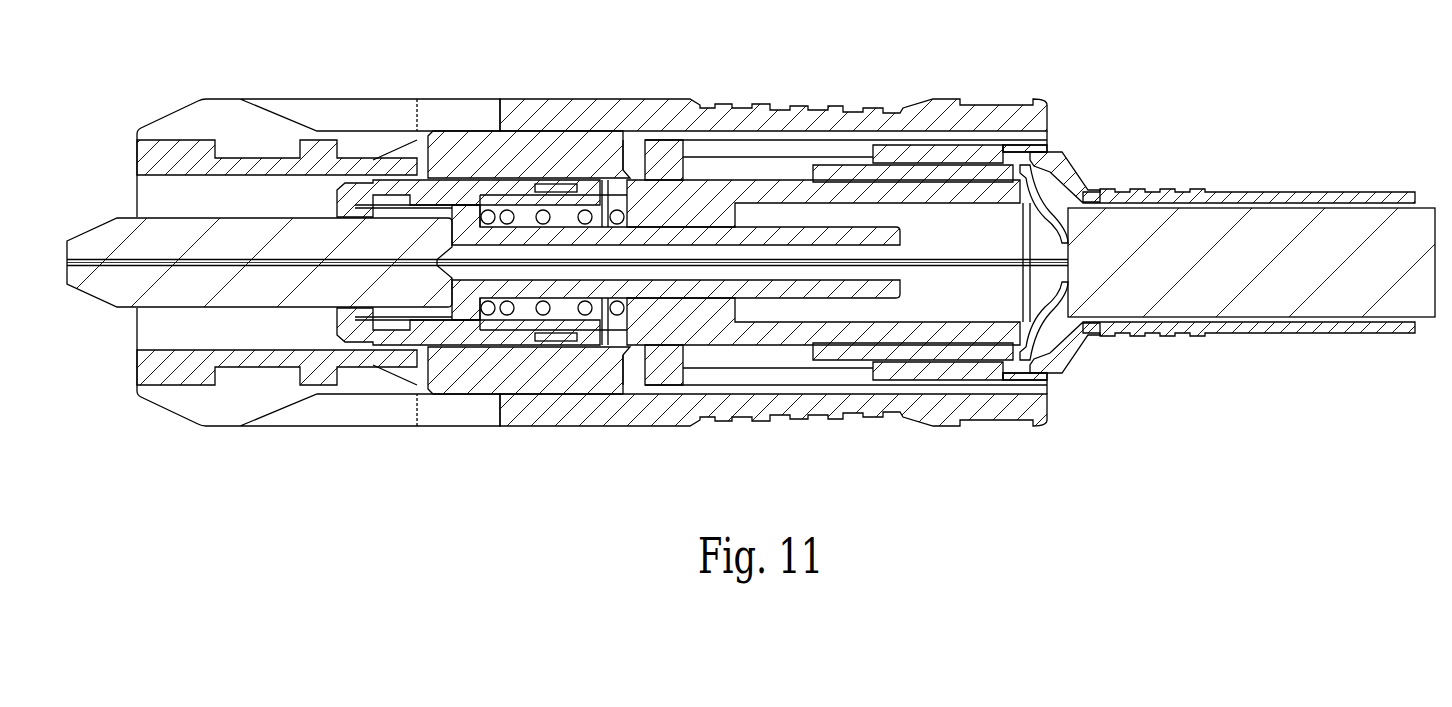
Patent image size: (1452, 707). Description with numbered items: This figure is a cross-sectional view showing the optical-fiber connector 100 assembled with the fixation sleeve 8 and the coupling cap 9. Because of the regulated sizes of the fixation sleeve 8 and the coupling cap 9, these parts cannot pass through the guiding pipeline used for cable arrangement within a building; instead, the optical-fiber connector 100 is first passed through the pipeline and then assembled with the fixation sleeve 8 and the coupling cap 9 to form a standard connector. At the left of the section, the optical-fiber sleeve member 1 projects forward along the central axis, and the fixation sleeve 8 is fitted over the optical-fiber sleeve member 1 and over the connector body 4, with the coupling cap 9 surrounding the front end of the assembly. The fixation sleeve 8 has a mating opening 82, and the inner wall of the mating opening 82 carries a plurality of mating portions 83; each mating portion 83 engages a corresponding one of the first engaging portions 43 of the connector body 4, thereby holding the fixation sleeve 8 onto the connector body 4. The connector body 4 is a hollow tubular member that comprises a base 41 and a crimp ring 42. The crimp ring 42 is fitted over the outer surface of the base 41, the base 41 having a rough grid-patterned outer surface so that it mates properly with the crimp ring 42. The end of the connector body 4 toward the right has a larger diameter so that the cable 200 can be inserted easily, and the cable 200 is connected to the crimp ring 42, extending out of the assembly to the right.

The optical-fiber sleeve member 1 is at (113, 245).
The coupling cap 9 is at (357, 100).
The fixation sleeve 8 is at (467, 135).
The mating portions 83 is at (632, 150).
The mating opening 82 is at (683, 180).
The first engaging portions 43 is at (638, 347).
The connector body 4 is at (1145, 480).
The base 41 is at (972, 330).
The crimp ring 42 is at (1142, 333).
The optical-fiber connector 100 is at (1216, 130).
The cable 200 is at (1323, 297).